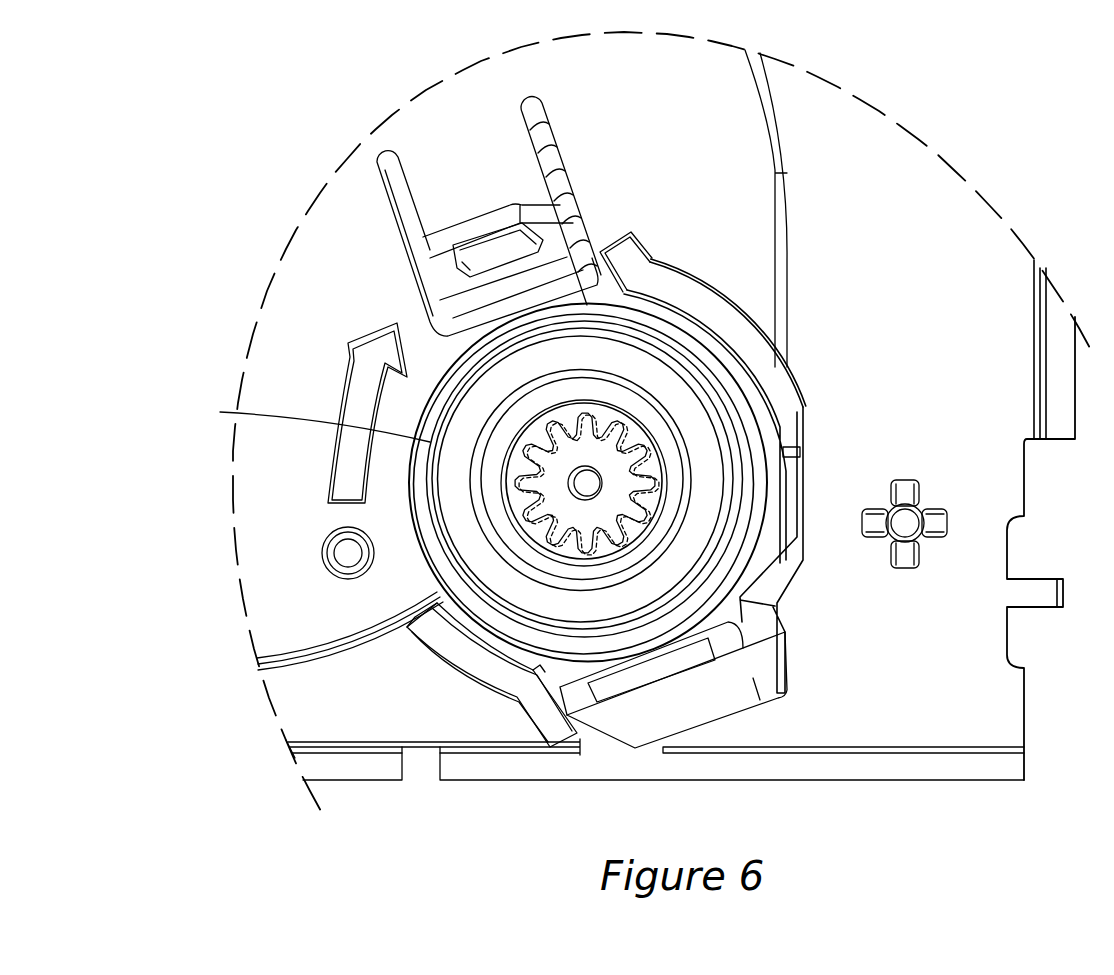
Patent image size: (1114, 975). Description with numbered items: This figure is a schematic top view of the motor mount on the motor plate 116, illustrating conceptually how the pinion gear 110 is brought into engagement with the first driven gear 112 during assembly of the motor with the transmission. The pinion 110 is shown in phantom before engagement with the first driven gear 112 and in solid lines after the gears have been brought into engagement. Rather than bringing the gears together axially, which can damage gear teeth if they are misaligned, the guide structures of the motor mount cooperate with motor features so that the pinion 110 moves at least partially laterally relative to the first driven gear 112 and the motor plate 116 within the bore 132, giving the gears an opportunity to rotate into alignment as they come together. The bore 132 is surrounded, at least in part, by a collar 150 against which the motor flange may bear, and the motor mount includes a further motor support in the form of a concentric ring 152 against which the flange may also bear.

The pinion gear 110 is at (543, 514).
The first driven gear 112 is at (517, 467).
The motor plate 116 is at (283, 522).
The bore 132 is at (540, 545).
The collar 150 is at (672, 460).
The concentric ring 152 is at (723, 397).